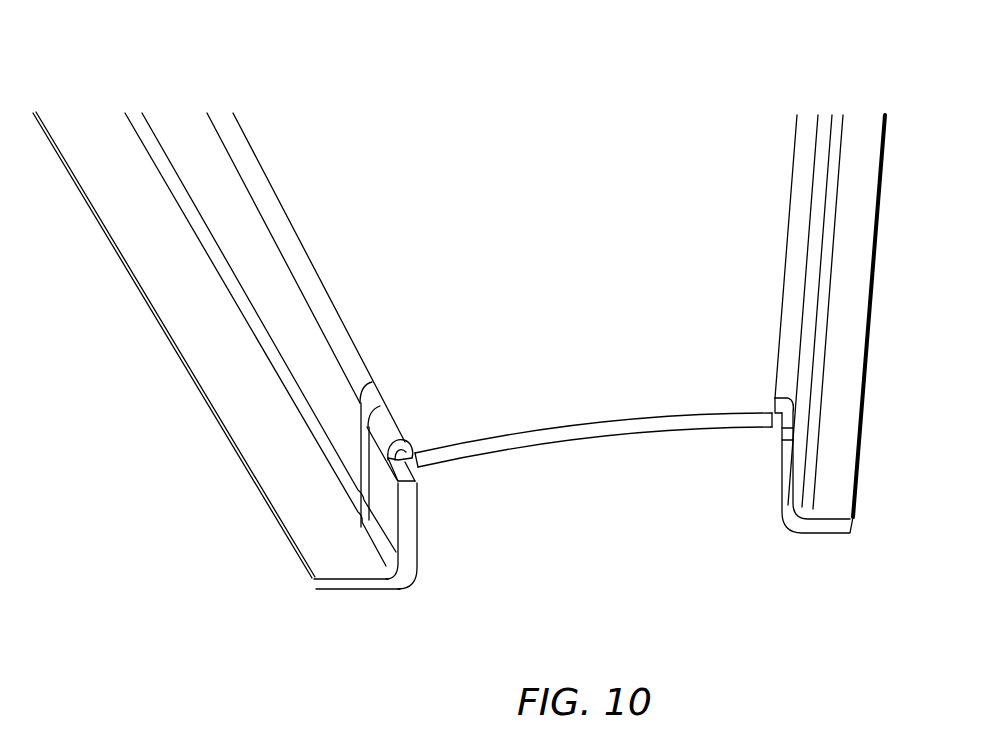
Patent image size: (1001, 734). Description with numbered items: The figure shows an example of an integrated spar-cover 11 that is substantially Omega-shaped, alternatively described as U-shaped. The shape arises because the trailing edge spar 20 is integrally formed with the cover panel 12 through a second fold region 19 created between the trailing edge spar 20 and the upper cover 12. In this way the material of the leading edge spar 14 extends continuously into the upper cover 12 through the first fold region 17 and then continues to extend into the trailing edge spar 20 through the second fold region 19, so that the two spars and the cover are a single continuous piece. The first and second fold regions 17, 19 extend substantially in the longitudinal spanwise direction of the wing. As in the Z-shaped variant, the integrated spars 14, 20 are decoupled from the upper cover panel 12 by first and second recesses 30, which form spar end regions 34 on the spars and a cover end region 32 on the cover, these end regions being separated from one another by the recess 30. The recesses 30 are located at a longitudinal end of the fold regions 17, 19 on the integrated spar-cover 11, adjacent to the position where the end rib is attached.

The integrated spar-cover 11 is at (638, 156).
The cover panel 12 is at (403, 153).
The leading edge spar 14 is at (213, 358).
The first fold region 17 is at (183, 133).
The second fold region 19 is at (806, 126).
The trailing edge spar 20 is at (838, 392).
The recess 30 is at (412, 458).
The cover end region 32 is at (583, 417).
The spar end region 34 is at (376, 563).